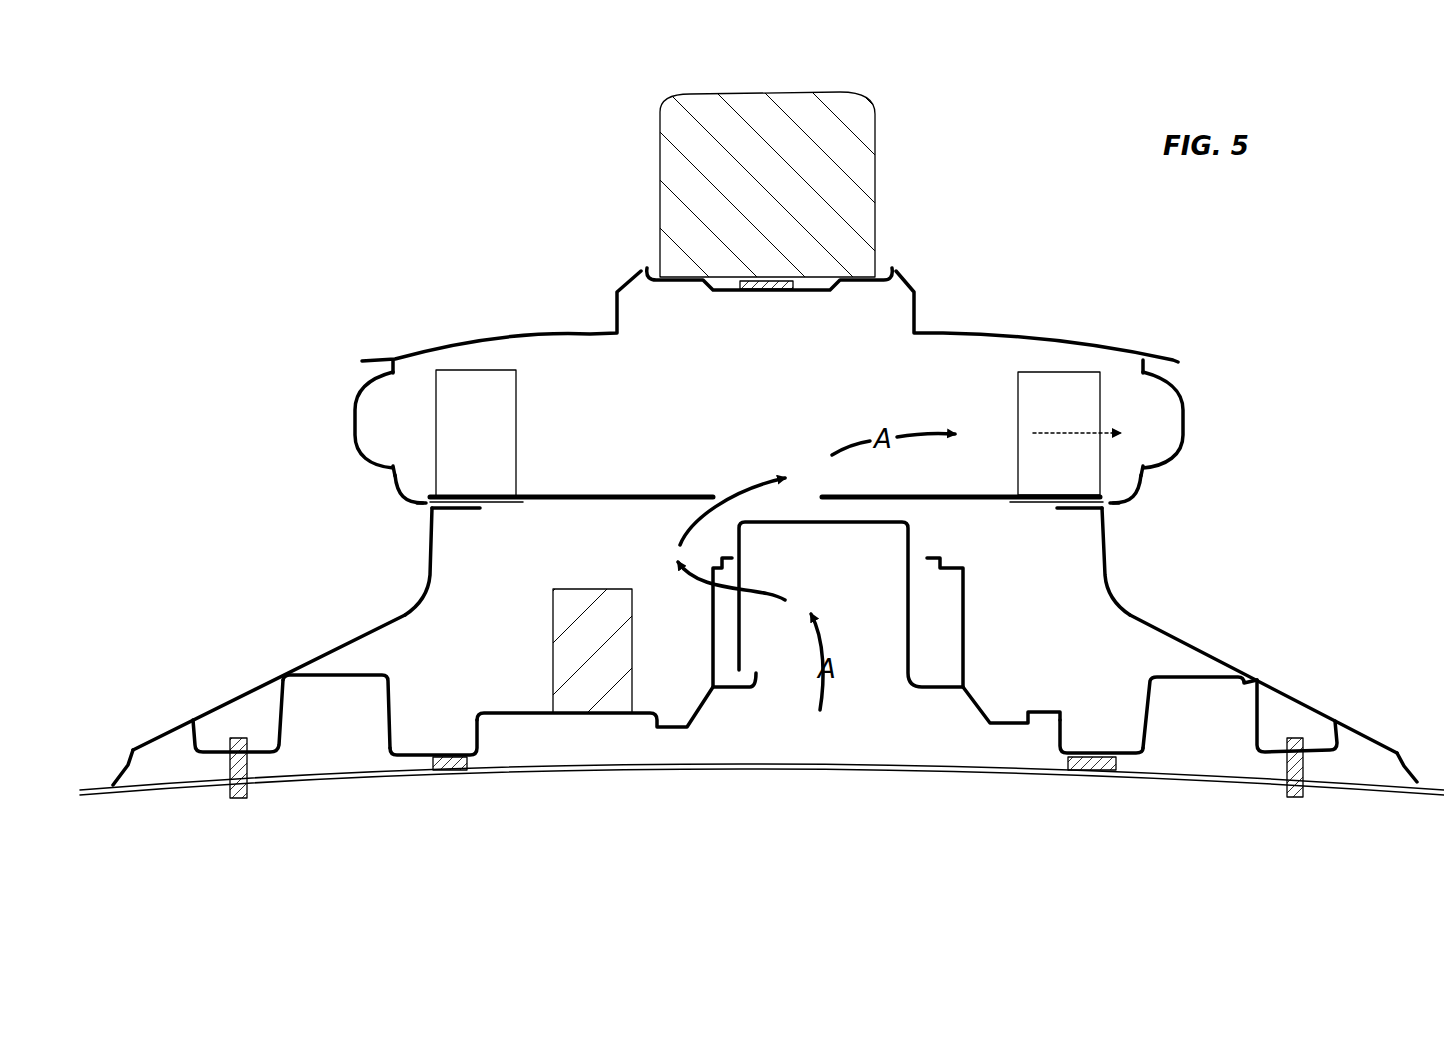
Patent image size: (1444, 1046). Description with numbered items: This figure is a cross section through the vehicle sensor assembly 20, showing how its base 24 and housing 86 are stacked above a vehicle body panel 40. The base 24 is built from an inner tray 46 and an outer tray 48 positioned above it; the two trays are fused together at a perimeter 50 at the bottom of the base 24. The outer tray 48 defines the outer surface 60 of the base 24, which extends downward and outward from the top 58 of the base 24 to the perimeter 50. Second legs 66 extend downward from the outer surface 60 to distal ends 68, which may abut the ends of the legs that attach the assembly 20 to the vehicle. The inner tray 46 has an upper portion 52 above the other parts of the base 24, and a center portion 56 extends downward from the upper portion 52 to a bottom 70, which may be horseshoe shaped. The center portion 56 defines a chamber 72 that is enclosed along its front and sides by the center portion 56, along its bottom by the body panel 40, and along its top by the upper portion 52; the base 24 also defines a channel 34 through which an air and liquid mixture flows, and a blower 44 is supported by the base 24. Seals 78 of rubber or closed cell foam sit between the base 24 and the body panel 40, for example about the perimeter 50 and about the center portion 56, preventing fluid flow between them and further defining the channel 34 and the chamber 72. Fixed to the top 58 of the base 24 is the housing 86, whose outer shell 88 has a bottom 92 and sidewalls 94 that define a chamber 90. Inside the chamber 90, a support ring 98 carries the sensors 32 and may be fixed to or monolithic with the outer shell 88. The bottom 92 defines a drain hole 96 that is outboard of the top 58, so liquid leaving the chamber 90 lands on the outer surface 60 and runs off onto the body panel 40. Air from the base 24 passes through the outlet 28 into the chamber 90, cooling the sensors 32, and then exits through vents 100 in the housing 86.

The assembly 20 is at (318, 190).
The base 24 is at (245, 605).
The outlet 28 is at (783, 682).
The sensor 32 is at (452, 370).
The channel 34 is at (770, 714).
The body panel 40 is at (858, 760).
The blower 44 is at (790, 518).
The inner tray 46 is at (512, 710).
The outer tray 48 is at (436, 585).
The perimeter 50 is at (120, 770).
The upper portion 52 is at (372, 676).
The center portion 56 is at (432, 752).
The top 58 is at (452, 510).
The outer surface 60 is at (364, 627).
The second leg 66 is at (232, 717).
The distal end 68 is at (255, 760).
The bottom 70 is at (425, 771).
The chamber 72 is at (768, 720).
The seal 78 is at (118, 789).
The housing 86 is at (1197, 356).
The outer shell 88 is at (398, 486).
The chamber 90 is at (764, 374).
The bottom 92 is at (512, 502).
The sidewall 94 is at (388, 468).
The drain hole 96 is at (425, 506).
The support ring 98 is at (668, 494).
The vent 100 is at (358, 410).